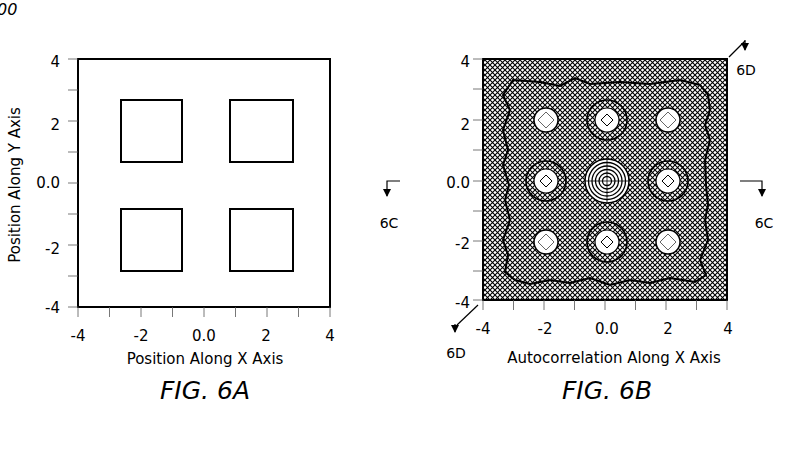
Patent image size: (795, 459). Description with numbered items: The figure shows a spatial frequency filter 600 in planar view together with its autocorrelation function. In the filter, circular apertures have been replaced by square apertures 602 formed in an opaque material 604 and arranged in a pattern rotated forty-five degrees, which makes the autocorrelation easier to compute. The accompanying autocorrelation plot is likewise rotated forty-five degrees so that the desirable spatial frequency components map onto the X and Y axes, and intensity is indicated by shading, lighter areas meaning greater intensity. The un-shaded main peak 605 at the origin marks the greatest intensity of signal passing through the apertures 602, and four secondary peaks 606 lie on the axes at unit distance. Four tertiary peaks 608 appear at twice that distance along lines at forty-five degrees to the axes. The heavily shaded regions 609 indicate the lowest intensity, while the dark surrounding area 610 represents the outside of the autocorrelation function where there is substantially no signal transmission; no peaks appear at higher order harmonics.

In FIG. 6A, the spatial frequency filter 600 is at (378, 44).
In FIG. 6A, the square apertures 602 is at (203, 87).
In FIG. 6A, the opaque material 604 is at (320, 87).
In FIG. 6B, the main peak 605 is at (598, 148).
In FIG. 6B, the secondary peaks 606 is at (612, 156).
In FIG. 6B, the tertiary peaks 608 is at (530, 213).
In FIG. 6B, the heavily shaded regions 609 is at (607, 169).
In FIG. 6B, the dark surrounding area 610 is at (607, 173).